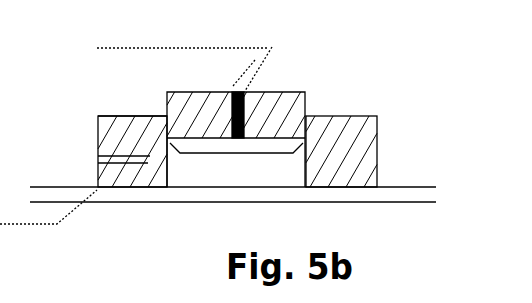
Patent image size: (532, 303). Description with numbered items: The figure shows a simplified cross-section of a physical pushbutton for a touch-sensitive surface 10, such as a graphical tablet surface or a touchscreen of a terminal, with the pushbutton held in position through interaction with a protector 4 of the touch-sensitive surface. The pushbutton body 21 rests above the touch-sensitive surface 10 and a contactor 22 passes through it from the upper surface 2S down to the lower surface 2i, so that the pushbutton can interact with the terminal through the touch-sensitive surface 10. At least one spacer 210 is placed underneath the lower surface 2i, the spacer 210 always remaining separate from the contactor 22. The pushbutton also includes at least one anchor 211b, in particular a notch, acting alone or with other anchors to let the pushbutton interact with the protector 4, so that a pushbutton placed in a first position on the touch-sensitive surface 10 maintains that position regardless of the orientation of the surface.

The touch-sensitive surface 10 is at (405, 191).
The spacer 210 is at (352, 149).
The anchor 211b is at (121, 175).
The pushbutton body 21 is at (274, 110).
The lower surface 2i is at (240, 156).
The contactor 22 is at (251, 93).
The protector 4 is at (165, 45).
The upper surface 2S is at (147, 96).